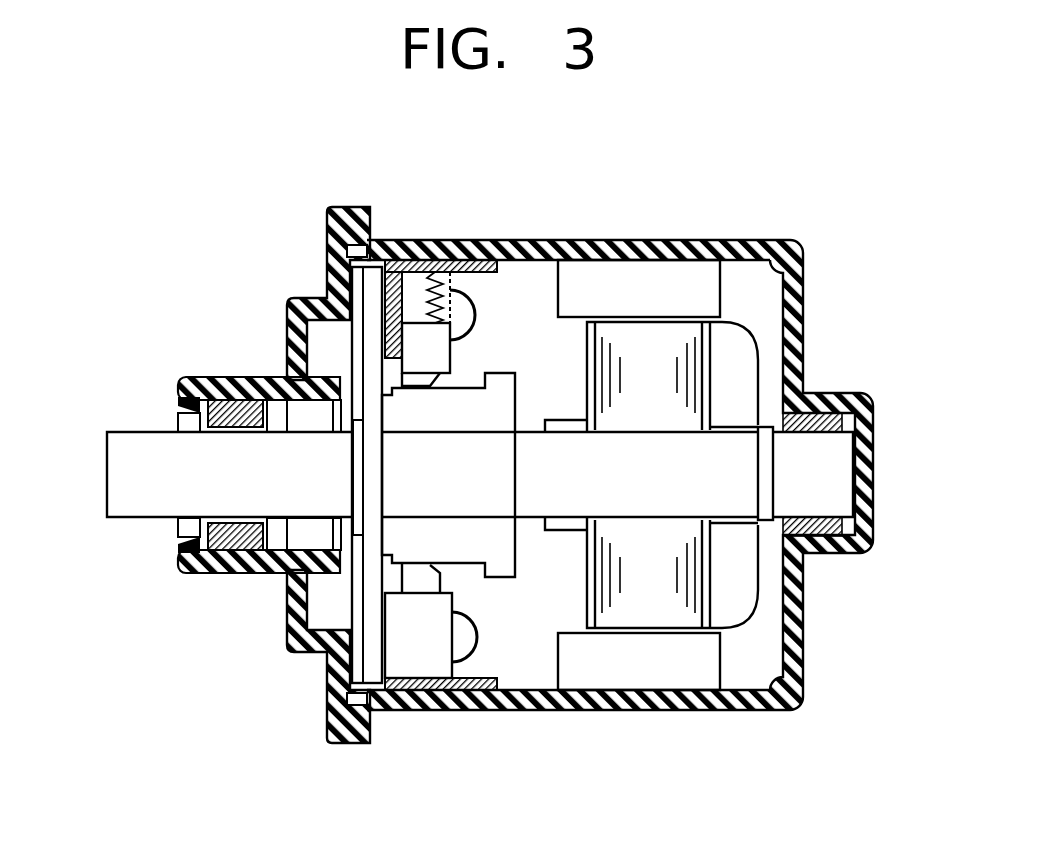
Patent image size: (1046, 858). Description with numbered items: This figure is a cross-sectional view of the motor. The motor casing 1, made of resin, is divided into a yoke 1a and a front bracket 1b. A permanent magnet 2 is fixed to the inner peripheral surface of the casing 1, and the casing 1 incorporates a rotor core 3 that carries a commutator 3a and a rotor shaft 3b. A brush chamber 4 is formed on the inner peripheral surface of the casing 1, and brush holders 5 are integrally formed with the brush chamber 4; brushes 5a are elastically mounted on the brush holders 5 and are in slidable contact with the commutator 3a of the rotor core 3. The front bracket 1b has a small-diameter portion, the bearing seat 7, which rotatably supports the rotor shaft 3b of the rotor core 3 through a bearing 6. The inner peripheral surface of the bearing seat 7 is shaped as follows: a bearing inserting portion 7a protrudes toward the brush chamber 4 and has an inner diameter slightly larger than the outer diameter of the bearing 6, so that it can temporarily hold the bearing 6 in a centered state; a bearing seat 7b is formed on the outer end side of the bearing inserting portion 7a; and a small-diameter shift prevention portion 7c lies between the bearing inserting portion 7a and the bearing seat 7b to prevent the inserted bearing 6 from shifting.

The motor casing 1 is at (788, 213).
The yoke 1a is at (700, 247).
The front bracket 1b is at (284, 279).
The permanent magnet 2 is at (630, 295).
The rotor core 3 is at (737, 360).
The commutator 3a is at (465, 540).
The rotor shaft 3b is at (145, 445).
The brush chamber 4 is at (371, 663).
The brush holder 5 is at (423, 655).
The brush 5a is at (425, 352).
The bearing 6 is at (213, 575).
The bearing seat 7 is at (243, 363).
The bearing inserting portion 7a is at (323, 575).
The bearing seat 7b is at (238, 572).
The shift prevention portion 7c is at (277, 555).